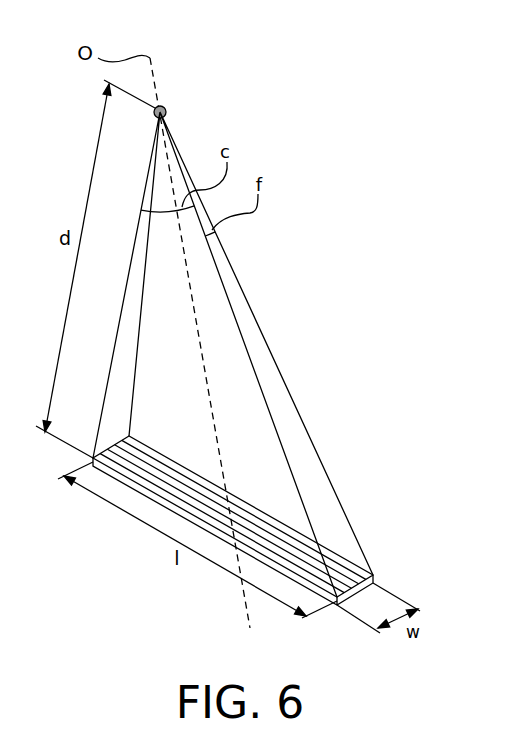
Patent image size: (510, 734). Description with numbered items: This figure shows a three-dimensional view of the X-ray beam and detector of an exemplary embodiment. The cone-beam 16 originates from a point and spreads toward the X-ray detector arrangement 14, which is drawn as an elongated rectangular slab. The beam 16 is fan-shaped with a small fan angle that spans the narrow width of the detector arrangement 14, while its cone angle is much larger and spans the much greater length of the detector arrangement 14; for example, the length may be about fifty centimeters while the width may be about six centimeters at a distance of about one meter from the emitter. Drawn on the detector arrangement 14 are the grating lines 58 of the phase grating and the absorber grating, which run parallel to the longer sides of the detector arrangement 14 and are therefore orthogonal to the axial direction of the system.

The X-ray detector arrangement 14 is at (123, 481).
The cone-beam 16 is at (258, 335).
The grating lines 58 is at (278, 512).